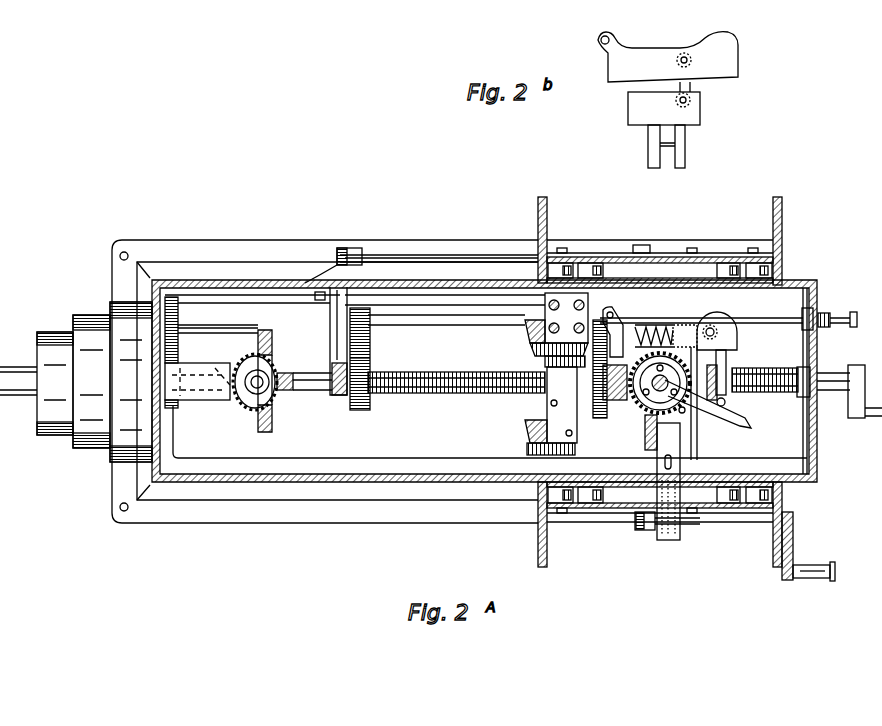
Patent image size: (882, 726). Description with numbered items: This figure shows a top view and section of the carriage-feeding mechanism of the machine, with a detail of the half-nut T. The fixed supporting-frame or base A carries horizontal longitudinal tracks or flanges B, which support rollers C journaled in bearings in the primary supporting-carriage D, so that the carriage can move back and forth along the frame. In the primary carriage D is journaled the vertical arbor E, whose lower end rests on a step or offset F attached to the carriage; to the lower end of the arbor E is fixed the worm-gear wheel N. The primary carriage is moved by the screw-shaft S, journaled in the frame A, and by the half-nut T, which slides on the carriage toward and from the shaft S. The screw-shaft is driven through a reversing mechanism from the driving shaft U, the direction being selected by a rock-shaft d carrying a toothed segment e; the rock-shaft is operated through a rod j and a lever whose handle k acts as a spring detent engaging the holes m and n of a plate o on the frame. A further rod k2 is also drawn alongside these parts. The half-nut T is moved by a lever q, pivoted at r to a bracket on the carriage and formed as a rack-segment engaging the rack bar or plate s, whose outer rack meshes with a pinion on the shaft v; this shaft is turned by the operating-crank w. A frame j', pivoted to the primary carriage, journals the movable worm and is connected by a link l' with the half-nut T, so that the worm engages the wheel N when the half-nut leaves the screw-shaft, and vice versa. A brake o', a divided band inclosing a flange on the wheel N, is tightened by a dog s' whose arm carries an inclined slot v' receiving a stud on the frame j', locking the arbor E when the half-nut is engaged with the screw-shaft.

In FIG. 2A, the tracks or flanges B is at (441, 262).
In FIG. 2A, the supporting-frame or base A is at (486, 429).
In FIG. 2A, the driving shaft U is at (248, 370).
In FIG. 2A, the screw-shaft S is at (456, 370).
In FIG. 2A, the hole in plate n is at (557, 374).
In FIG. 2A, the vertical arbor E is at (609, 382).
In FIG. 2A, the hole in plate m is at (608, 325).
In FIG. 2A, the handle k is at (633, 322).
In FIG. 2A, the plate o is at (702, 321).
In FIG. 2A, the rod j is at (708, 404).
In FIG. 2A, the worm-gear wheel N is at (660, 404).
In FIG. 2A, the lever q is at (671, 443).
In FIG. 2A, the rod k2 is at (768, 312).
In FIG. 2A, the primary supporting-carriage D is at (620, 257).
In FIG. 2A, the rollers C is at (560, 262).
In FIG. 2A, the rack bar or plate s is at (663, 534).
In FIG. 2A, the shaft v is at (682, 532).
In FIG. 2A, the operating-crank w is at (800, 543).
In FIG. 2A, the rock-shaft d is at (484, 255).
In FIG. 2A, the toothed segment e is at (337, 250).
In FIG. 2A, the step or offset F is at (647, 439).
In FIG. 2A, the pivot r is at (733, 448).
In FIG. 2A, the worm frame j' is at (749, 341).
In FIG. 2A, the slot v' is at (739, 365).
In FIG. 2A, the link l' is at (729, 378).
In FIG. 2B, the link l' is at (712, 94).
In FIG. 2A, the dog or lever s' is at (761, 411).
In FIG. 2A, the brake o' is at (662, 406).
In FIG. 2B, the half-nut T is at (668, 100).